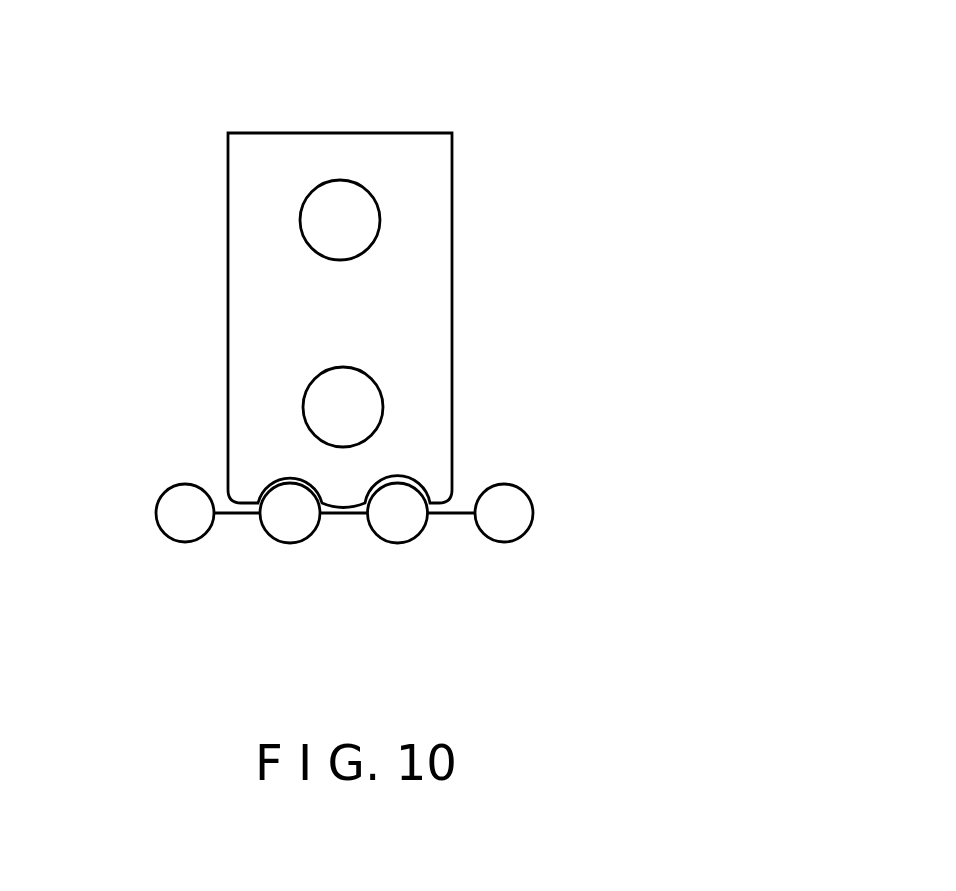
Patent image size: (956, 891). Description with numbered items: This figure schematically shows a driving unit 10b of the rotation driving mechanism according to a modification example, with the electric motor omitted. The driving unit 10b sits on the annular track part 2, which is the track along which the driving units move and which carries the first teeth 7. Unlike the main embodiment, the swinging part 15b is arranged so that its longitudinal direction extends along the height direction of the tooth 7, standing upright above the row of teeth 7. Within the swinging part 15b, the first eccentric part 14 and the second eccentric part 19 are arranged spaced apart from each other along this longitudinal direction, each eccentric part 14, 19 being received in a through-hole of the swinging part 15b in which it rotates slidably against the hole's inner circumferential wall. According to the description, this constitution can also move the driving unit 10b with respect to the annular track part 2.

The driving unit 10b is at (458, 102).
The swinging part 15b is at (228, 232).
The second eccentric part 19 is at (360, 222).
The first eccentric part 14 is at (360, 407).
The first tooth 7 is at (287, 543).
The annular track part 2 is at (520, 597).